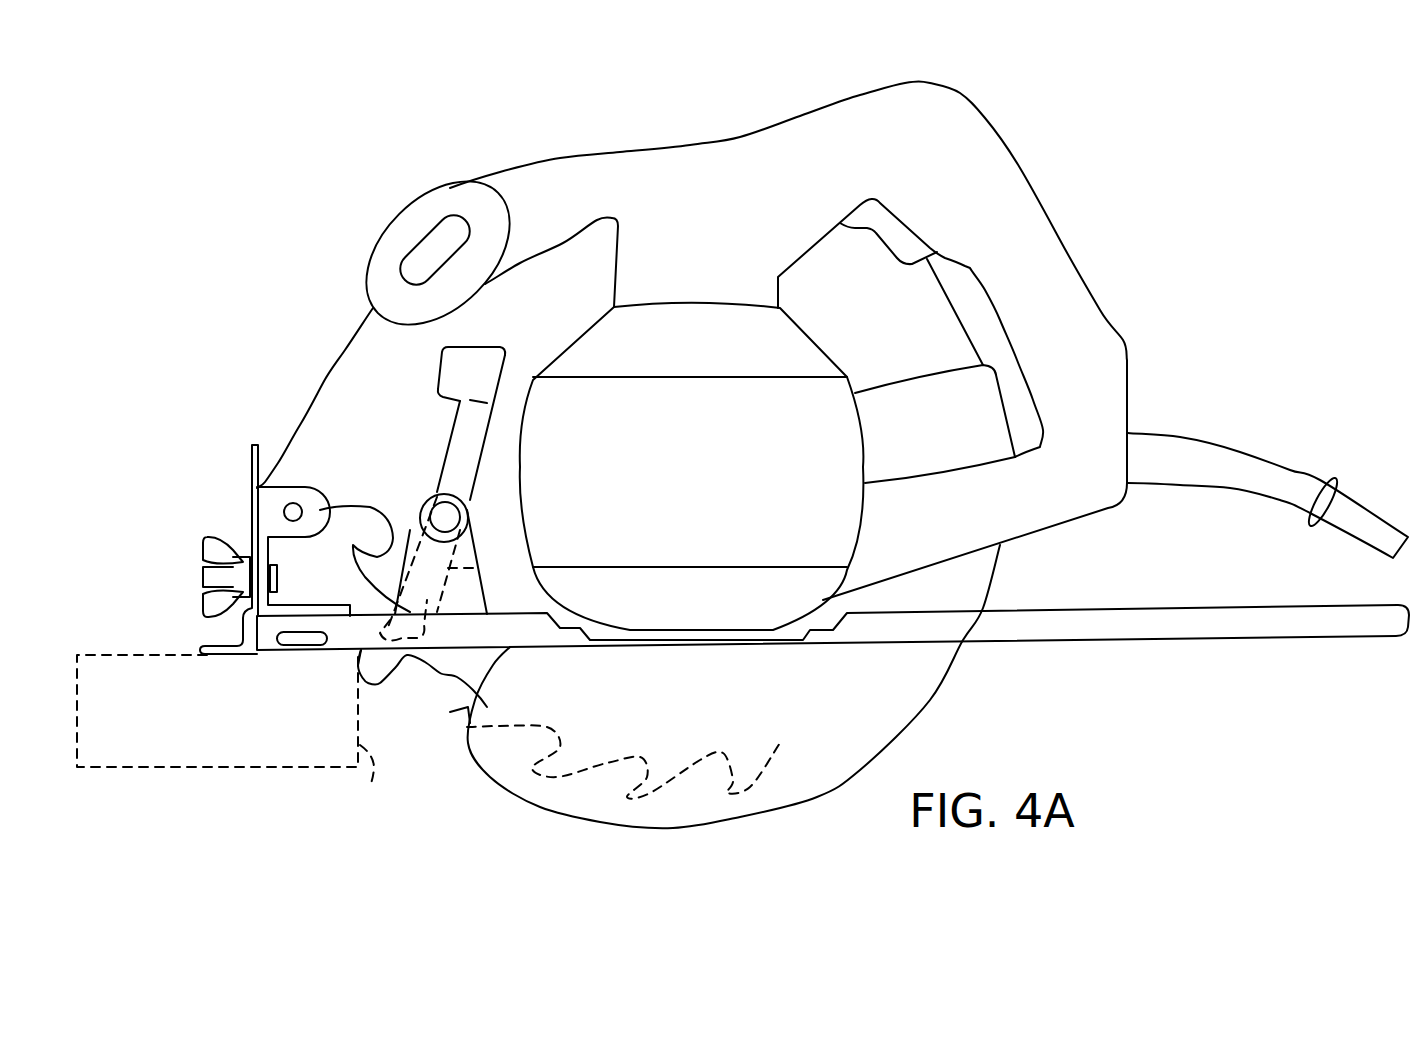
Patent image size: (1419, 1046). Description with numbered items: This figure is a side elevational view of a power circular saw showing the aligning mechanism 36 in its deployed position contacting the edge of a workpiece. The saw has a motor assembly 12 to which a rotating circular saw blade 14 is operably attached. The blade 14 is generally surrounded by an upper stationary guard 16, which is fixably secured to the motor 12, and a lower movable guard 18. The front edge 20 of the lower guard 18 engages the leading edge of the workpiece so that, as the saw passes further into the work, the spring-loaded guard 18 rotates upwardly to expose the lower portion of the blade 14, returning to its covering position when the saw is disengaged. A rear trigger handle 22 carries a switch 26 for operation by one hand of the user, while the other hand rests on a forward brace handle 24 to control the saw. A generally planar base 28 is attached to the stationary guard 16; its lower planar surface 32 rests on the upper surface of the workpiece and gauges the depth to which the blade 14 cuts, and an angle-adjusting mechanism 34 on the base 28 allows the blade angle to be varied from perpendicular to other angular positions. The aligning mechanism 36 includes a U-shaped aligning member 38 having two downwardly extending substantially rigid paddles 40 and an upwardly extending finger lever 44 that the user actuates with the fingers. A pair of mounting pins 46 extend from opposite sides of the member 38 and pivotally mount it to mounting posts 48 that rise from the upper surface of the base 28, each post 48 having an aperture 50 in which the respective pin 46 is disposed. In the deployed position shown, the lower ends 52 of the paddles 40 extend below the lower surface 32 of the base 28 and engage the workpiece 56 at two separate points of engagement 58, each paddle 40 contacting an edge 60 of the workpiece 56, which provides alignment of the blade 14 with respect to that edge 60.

The motor assembly 12 is at (692, 466).
The circular saw blade 14 is at (456, 668).
The upper stationary guard 16 is at (322, 385).
The lower movable guard 18 is at (790, 802).
The front edge 20 is at (467, 743).
The rear trigger handle 22 is at (1050, 222).
The forward brace handle 24 is at (403, 212).
The switch 26 is at (895, 245).
The base 28 is at (1118, 640).
The lower planar surface 32 is at (277, 652).
The angle-adjusting mechanism 34 is at (196, 575).
The aligning mechanism 36 is at (467, 457).
The U-shaped aligning member 38 is at (480, 458).
The paddles 40 is at (478, 563).
The finger lever 44 is at (443, 372).
The mounting pins 46 is at (460, 518).
The mounting posts 48 is at (478, 594).
The aperture 50 is at (425, 515).
The lower ends 52 is at (373, 680).
The workpiece 56 is at (223, 740).
The points of engagement 58 is at (357, 676).
The edge 60 is at (369, 776).